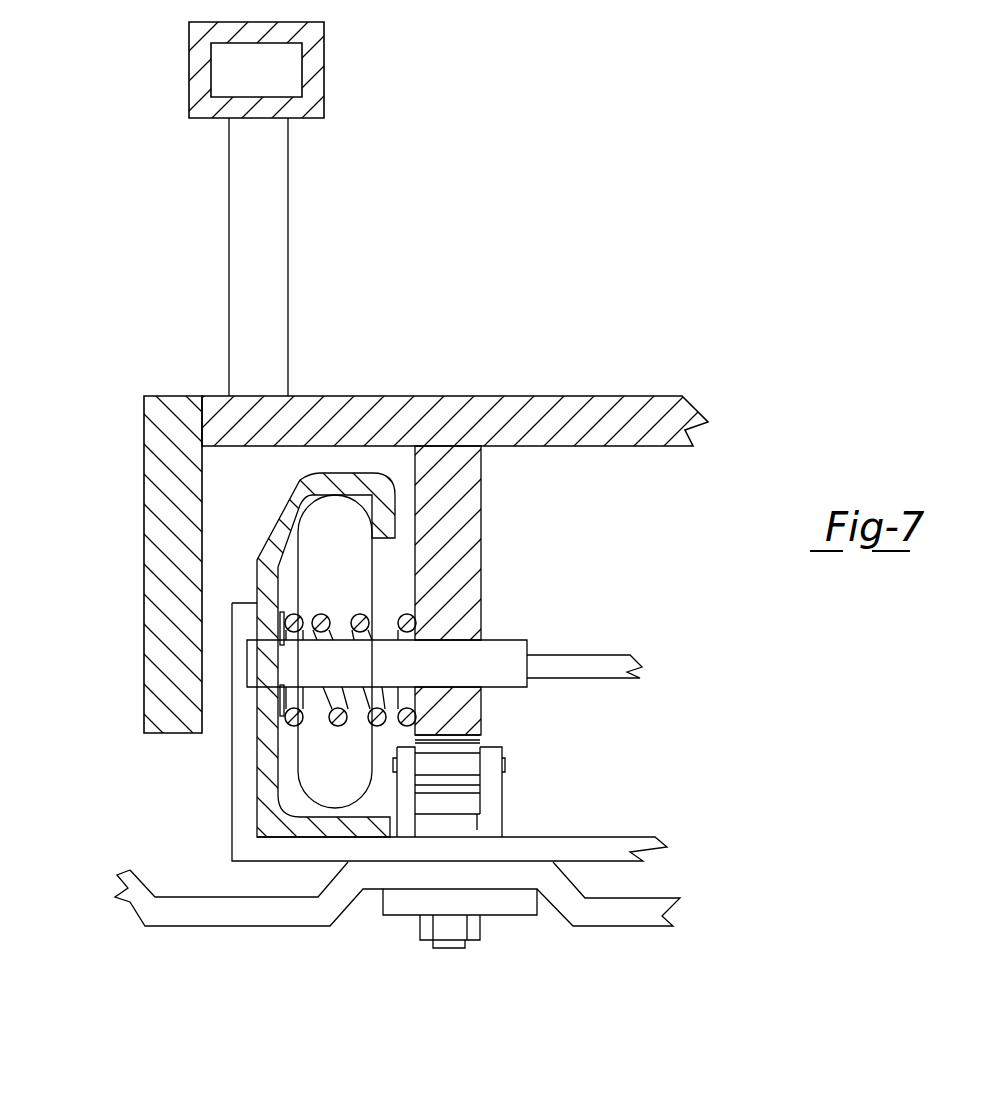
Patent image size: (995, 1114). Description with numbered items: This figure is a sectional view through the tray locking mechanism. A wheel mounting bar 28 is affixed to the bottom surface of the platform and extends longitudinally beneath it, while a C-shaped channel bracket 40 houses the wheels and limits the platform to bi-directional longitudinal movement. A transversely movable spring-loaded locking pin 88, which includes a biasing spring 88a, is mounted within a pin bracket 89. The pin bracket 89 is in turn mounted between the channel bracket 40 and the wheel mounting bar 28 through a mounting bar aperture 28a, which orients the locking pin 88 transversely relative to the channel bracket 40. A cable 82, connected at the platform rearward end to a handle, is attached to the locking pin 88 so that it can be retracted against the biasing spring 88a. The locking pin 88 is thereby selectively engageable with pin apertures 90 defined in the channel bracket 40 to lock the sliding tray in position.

The wheel mounting bar 28 is at (481, 475).
The mounting bar aperture 28a is at (462, 635).
The channel bracket 40 is at (283, 524).
The locking pin 88 is at (505, 640).
The biasing spring 88a is at (362, 614).
The pin bracket 89 is at (280, 617).
The pin aperture 90 is at (278, 688).
The cable 82 is at (560, 667).